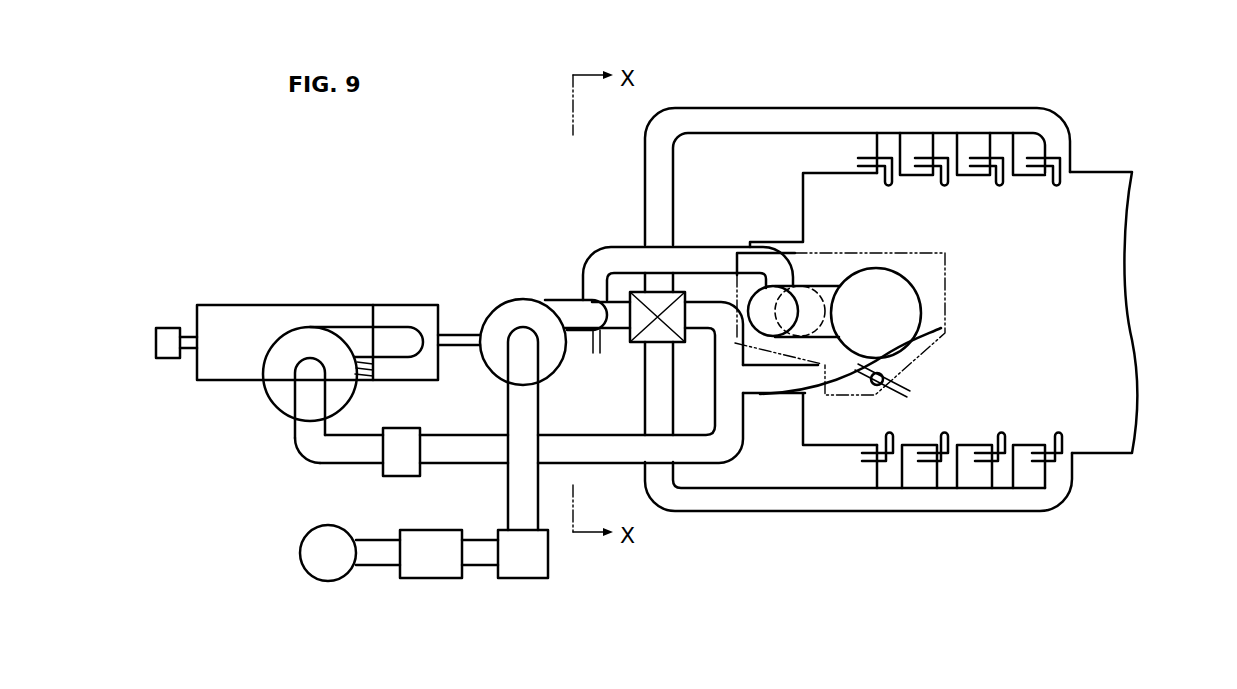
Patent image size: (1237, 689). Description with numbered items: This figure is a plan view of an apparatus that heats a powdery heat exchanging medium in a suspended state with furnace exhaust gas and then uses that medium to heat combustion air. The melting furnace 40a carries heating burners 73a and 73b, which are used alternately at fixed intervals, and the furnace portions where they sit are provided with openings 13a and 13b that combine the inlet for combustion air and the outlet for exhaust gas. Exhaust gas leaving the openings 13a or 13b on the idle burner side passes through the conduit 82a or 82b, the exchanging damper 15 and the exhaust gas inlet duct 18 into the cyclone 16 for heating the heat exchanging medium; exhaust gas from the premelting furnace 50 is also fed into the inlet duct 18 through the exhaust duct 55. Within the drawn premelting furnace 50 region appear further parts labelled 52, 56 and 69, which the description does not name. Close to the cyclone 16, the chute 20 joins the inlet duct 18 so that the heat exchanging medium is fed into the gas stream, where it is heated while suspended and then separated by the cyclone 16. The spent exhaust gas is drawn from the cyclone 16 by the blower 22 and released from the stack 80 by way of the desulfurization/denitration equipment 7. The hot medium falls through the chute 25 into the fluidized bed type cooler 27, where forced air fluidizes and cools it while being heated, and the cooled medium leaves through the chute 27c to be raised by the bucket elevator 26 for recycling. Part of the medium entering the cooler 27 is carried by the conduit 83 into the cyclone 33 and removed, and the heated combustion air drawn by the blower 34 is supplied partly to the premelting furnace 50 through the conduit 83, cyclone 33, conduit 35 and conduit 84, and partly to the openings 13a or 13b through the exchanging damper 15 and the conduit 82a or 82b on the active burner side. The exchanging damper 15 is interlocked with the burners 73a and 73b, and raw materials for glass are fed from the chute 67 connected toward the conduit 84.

The desulfurization/denitration equipment 7 is at (423, 567).
The opening 13a is at (950, 178).
The opening 13b is at (1000, 433).
The exchanging damper 15 is at (684, 331).
The cyclone 16 is at (519, 313).
The exhaust gas inlet duct 18 is at (597, 313).
The chute 20 is at (593, 336).
The blower 22 is at (523, 567).
The chute 25 is at (462, 332).
The bucket elevator 26 is at (172, 326).
The fluidized bed type cooler 27 is at (254, 322).
The chute 27c is at (190, 349).
The cyclone 33 is at (276, 398).
The blower 34 is at (396, 474).
The conduit 35 is at (464, 466).
The melting furnace 40a is at (824, 216).
The premelting furnace 50 is at (935, 277).
The roller 52 is at (876, 280).
The exhaust duct 55 is at (703, 257).
The roller 56 is at (806, 308).
The chute 67 is at (905, 386).
The roller 69 is at (872, 372).
The heating burner 73a is at (892, 187).
The heating burner 73b is at (947, 433).
The stack 80 is at (328, 570).
The conduit 82a is at (810, 107).
The conduit 82b is at (785, 505).
The conduit 83 is at (393, 333).
The conduit 84 is at (768, 388).